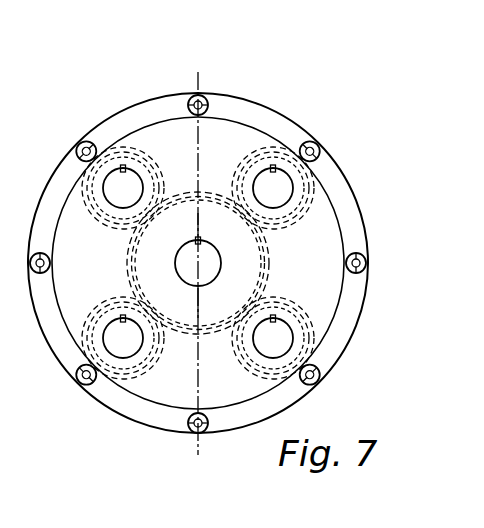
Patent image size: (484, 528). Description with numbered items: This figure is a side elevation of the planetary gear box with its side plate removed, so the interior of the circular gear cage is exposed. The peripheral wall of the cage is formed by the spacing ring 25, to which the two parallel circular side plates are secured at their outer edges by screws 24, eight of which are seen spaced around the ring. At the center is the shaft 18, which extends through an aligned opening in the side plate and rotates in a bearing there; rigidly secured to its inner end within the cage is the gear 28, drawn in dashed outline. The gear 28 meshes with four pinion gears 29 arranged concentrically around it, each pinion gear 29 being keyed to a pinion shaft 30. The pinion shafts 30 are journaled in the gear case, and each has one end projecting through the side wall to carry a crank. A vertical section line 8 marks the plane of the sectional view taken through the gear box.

The section line 8— 8 is at (213, 72).
The shaft 18 is at (214, 258).
The screws 24 is at (204, 100).
The spacing ring 25 is at (315, 147).
The gear 28 is at (198, 284).
The pinion gears 29 is at (238, 163).
The pinion shafts 30 is at (120, 197).